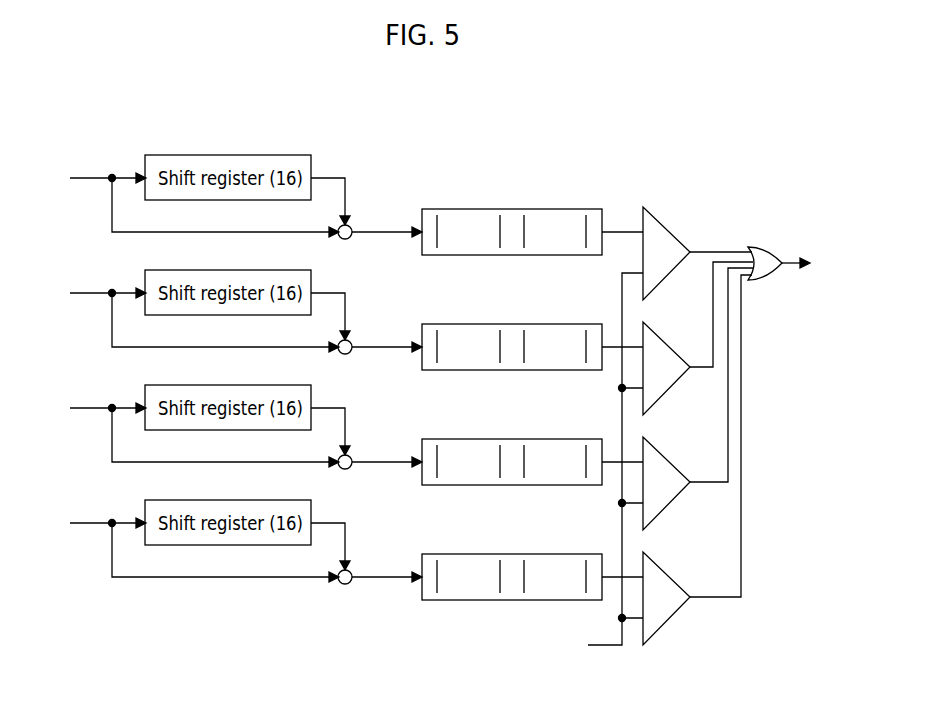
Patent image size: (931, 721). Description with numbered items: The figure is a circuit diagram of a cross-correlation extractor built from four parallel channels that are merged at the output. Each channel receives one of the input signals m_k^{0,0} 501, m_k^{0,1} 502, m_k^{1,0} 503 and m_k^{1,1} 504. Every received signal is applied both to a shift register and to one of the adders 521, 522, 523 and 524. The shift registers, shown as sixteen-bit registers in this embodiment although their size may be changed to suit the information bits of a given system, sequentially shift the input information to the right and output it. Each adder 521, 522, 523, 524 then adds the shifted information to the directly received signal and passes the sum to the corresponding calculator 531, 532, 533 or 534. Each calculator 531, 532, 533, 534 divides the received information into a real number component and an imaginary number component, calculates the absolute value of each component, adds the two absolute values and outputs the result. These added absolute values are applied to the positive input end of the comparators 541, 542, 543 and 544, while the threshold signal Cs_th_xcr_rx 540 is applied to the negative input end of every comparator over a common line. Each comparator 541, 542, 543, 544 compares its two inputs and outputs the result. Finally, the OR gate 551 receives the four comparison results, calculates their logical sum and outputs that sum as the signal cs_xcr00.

The signal m_k^{0,0} 501 is at (48, 197).
The signal m_k^{0,1} 502 is at (48, 312).
The signal m_k^{1,0} 503 is at (48, 427).
The signal m_k^{1,1} 504 is at (48, 542).
The adder 521 is at (350, 240).
The adder 522 is at (350, 355).
The adder 523 is at (350, 470).
The adder 524 is at (350, 585).
The calculator 531 is at (563, 208).
The calculator 532 is at (563, 323).
The calculator 533 is at (563, 438).
The calculator 534 is at (563, 553).
The signal Cs_th_xcr_rx 540 is at (558, 662).
The comparator 541 is at (655, 213).
The comparator 542 is at (655, 328).
The comparator 543 is at (655, 443).
The comparator 544 is at (655, 558).
The OR gate 551 is at (750, 245).